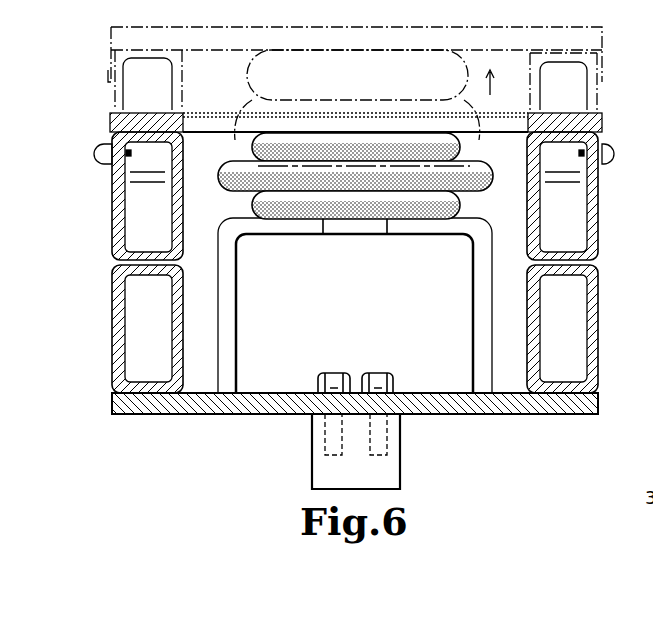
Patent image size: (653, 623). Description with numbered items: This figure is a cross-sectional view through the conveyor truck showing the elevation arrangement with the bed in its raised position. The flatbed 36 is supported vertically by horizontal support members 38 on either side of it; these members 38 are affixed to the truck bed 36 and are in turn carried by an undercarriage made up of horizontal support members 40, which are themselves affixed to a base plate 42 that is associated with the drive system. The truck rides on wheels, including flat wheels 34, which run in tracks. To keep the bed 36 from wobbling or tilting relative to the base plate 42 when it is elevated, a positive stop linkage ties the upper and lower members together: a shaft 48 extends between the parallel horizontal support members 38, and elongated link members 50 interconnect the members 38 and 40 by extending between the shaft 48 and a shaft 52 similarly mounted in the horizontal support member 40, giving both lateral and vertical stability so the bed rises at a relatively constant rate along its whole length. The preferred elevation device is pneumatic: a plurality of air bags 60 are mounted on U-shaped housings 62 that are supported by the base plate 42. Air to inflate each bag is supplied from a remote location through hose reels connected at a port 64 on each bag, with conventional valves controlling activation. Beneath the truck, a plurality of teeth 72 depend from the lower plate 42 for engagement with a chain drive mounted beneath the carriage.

The flat wheels 34 is at (207, 55).
The flatbed 36 is at (447, 28).
The horizontal support members 38 is at (114, 205).
The horizontal support members 40 is at (597, 320).
The base plate 42 is at (515, 415).
The shaft 48 is at (118, 299).
The elongated link members 50 is at (587, 55).
The shaft 52 is at (354, 82).
The air bags 60 is at (488, 172).
The U-shaped housings 62 is at (492, 237).
The port 64 is at (353, 228).
The teeth 72 is at (400, 466).